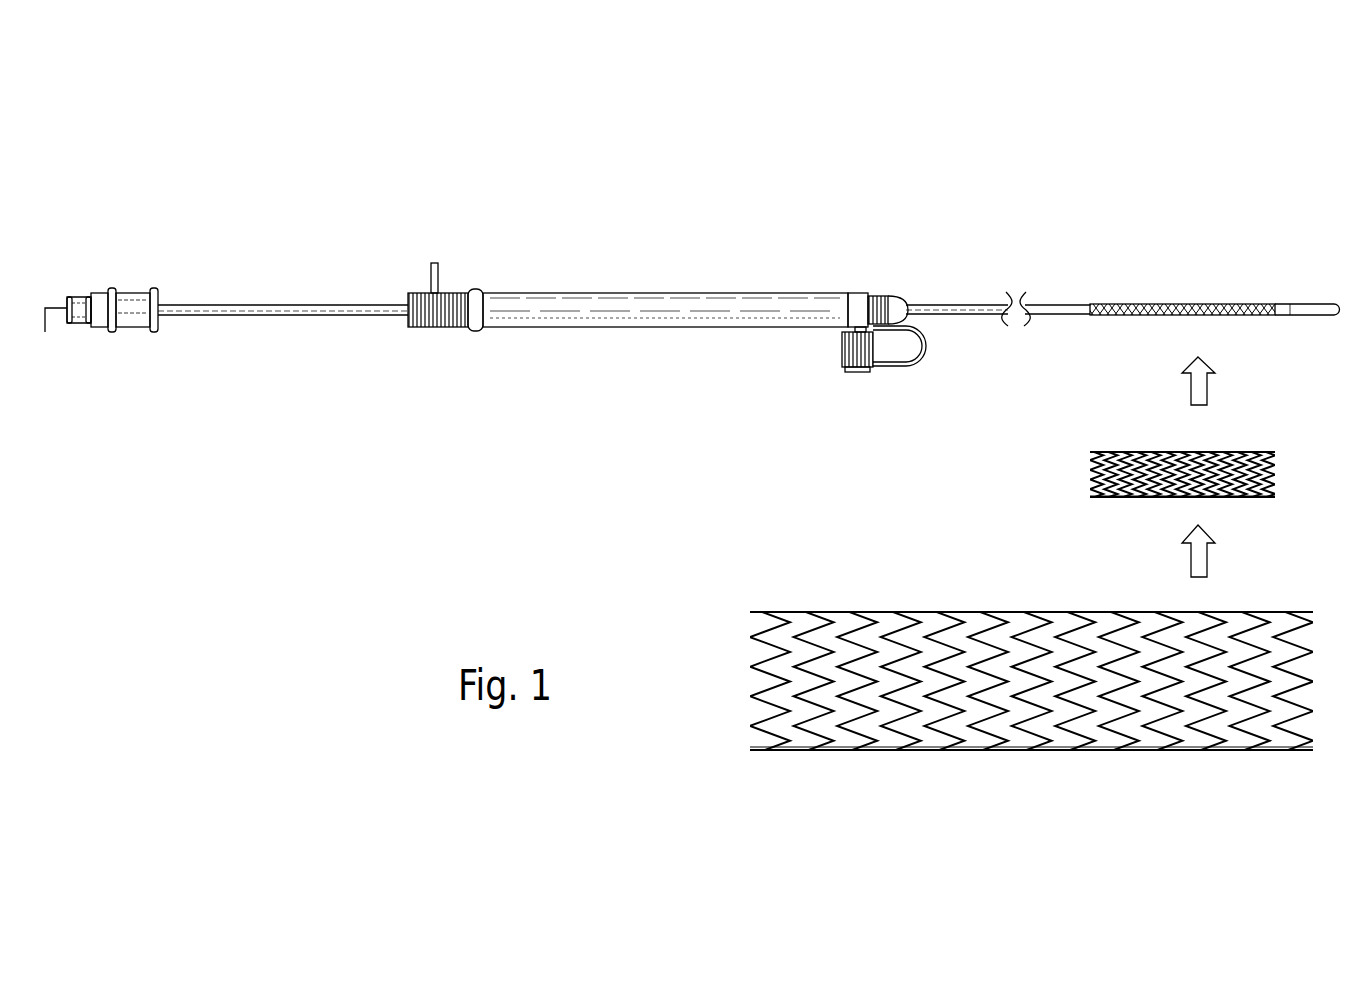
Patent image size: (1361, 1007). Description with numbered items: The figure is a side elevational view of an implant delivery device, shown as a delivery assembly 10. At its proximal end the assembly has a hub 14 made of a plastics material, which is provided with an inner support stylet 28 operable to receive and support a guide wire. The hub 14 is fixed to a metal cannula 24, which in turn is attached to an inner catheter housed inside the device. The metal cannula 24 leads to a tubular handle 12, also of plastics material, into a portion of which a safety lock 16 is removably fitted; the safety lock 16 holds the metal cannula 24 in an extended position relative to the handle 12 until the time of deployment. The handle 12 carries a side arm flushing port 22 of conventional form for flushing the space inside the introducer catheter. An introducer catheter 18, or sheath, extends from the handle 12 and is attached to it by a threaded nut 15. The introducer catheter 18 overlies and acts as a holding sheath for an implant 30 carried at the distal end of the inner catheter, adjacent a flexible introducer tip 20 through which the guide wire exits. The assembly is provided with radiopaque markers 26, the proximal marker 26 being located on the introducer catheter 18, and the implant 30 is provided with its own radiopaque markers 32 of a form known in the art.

The delivery assembly 10 is at (242, 158).
The tubular handle 12 is at (635, 293).
The hub 14 is at (130, 293).
The threaded nut 15 is at (878, 296).
The safety lock 16 is at (434, 263).
The introducer catheter 18 is at (1048, 304).
The introducer tip 20 is at (1318, 304).
The side arm flushing port 22 is at (857, 374).
The metal cannula 24 is at (275, 305).
The radiopaque markers 26 is at (1090, 304).
The inner support stylet 28 is at (55, 308).
The implant 30 is at (902, 752).
The radiopaque markers of the implant 32 is at (750, 612).